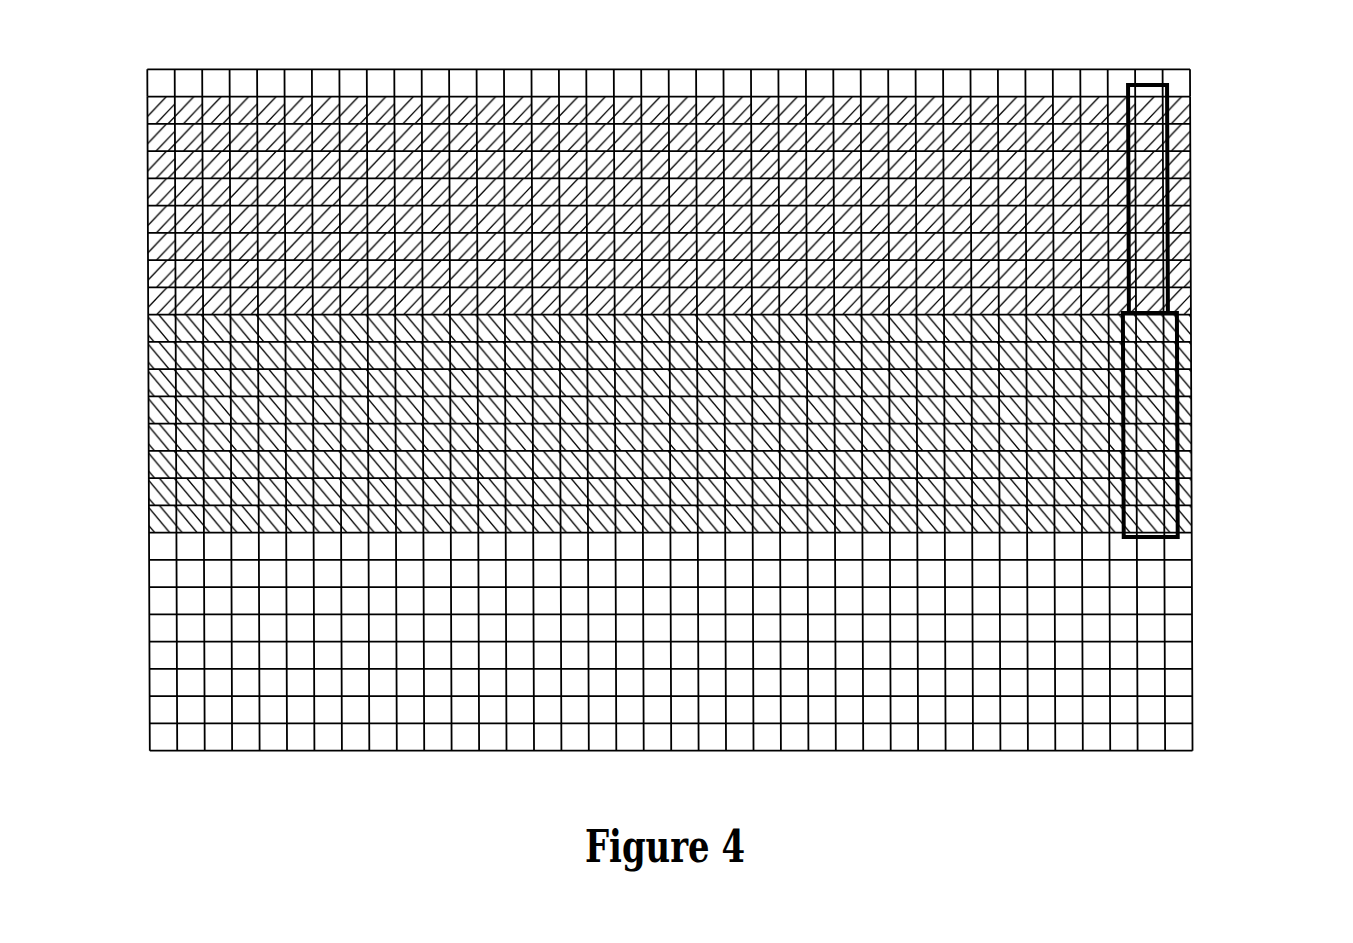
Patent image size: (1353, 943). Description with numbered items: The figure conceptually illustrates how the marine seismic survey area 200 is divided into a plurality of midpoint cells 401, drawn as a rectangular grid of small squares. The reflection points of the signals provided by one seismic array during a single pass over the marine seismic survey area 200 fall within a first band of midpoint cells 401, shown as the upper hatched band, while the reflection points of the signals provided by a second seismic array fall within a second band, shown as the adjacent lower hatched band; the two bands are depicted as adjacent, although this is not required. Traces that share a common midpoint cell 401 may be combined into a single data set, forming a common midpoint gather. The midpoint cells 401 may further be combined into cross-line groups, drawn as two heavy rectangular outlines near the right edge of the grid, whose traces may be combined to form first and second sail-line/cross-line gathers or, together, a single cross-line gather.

The marine seismic survey area 200 is at (119, 593).
The midpoint cells 401 is at (605, 69).